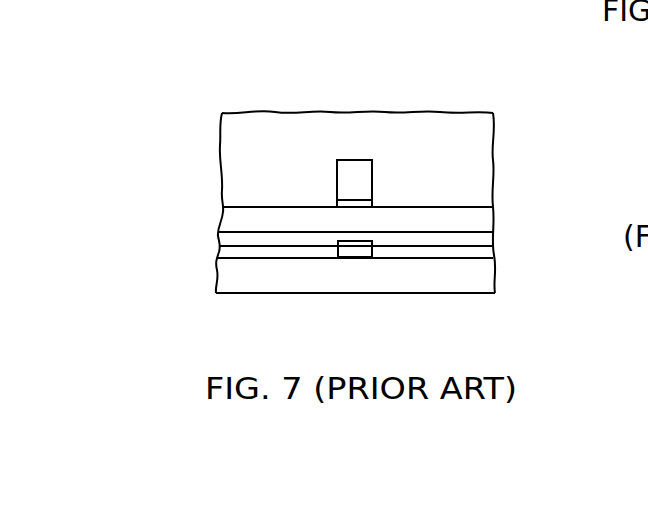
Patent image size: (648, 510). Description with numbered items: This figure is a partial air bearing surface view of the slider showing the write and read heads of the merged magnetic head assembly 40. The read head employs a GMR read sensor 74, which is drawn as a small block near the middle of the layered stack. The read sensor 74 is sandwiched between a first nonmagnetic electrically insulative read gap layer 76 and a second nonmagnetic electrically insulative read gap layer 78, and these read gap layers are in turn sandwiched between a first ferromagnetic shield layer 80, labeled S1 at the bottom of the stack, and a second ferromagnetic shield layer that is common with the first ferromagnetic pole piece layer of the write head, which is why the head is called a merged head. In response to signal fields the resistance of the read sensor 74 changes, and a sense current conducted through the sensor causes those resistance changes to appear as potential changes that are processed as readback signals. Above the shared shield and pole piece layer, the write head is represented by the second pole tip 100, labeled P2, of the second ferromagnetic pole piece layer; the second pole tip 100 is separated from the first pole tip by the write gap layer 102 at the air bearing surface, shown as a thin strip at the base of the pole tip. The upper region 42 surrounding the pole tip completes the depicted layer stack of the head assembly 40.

The merged magnetic head assembly 40 is at (517, 124).
The top pole / upper layer 42 is at (236, 137).
The first ferromagnetic shield layer 80 is at (483, 277).
The first shield layer S1 is at (397, 279).
The second nonmagnetic electrically insulative read gap layer 78 is at (463, 238).
The first nonmagnetic electrically insulative read gap layer 76 is at (255, 258).
The GMR read sensor 74 is at (353, 257).
The second pole tip 100 is at (362, 167).
The write gap layer 102 is at (353, 206).
The second pole P2 is at (358, 178).